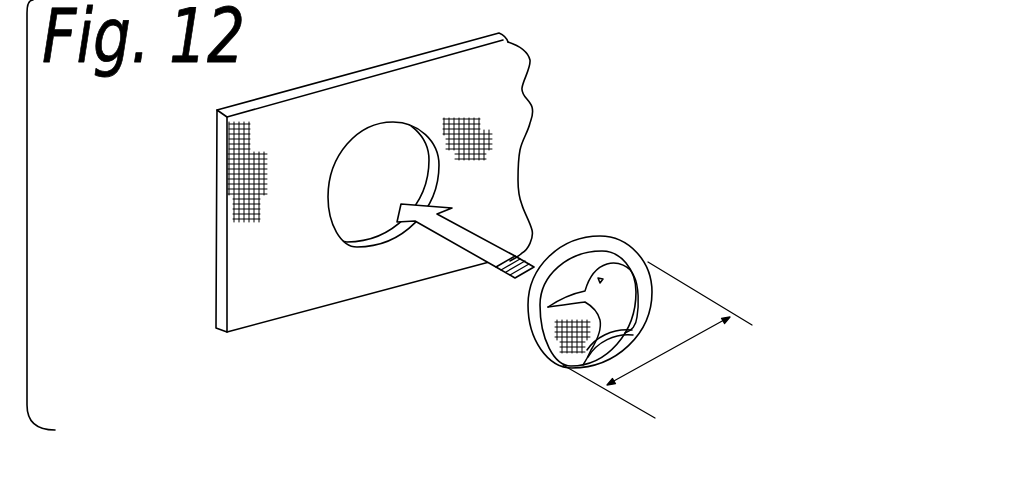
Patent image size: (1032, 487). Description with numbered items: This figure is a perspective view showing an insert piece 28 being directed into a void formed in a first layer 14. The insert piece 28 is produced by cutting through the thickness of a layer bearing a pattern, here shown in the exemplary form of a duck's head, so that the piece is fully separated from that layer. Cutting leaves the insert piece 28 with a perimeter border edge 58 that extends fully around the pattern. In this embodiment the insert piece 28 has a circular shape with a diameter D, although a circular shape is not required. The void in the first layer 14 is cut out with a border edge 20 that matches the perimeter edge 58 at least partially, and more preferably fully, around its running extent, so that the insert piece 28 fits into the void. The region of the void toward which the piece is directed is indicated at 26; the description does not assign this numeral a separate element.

The first layer 14 is at (292, 287).
The border edge 20 is at (434, 163).
The aperture inner wall / recess 26 is at (351, 193).
The insert piece 28 is at (648, 262).
The perimeter border edge 58 is at (536, 331).
The diameter D is at (657, 340).